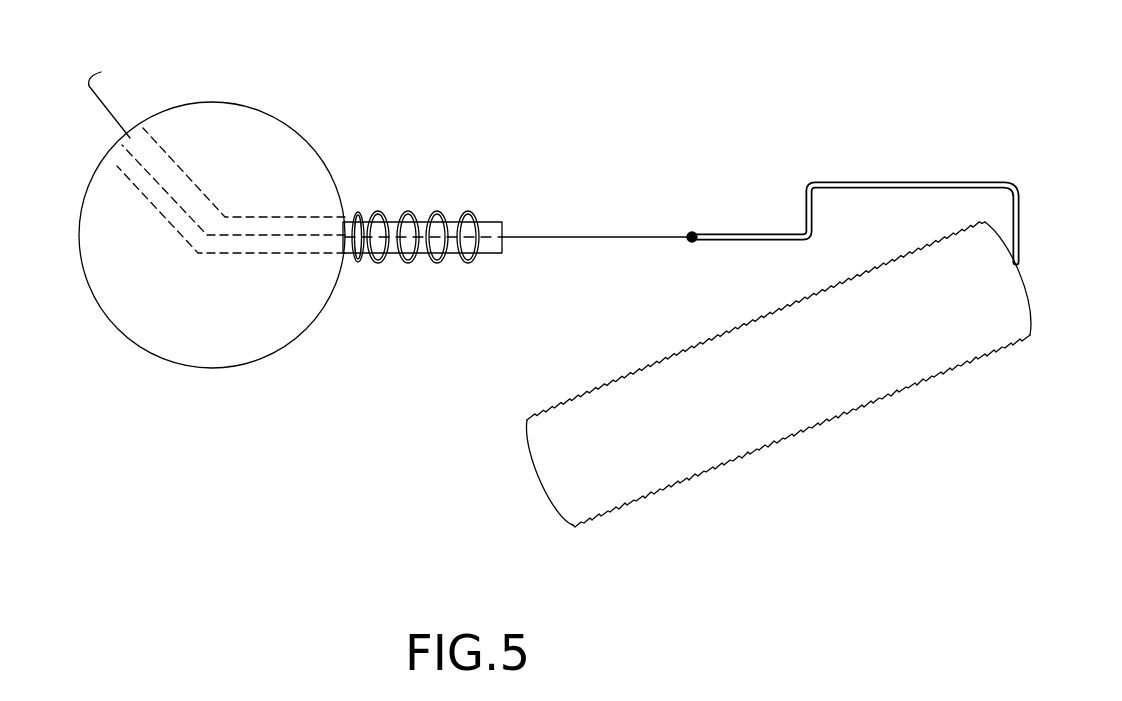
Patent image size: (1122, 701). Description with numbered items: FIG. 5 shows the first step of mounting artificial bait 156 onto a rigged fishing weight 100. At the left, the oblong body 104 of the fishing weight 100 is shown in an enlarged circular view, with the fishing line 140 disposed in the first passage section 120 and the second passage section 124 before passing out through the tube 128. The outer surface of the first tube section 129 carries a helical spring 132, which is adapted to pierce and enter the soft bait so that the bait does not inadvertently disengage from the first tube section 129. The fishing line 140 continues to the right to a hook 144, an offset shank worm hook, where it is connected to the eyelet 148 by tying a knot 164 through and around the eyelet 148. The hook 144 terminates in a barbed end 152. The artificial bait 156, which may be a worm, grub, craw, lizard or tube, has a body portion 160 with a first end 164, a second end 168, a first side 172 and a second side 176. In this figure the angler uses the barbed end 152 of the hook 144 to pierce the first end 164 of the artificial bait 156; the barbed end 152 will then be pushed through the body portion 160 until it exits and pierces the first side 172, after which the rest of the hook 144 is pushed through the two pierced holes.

The fishing weight 100 is at (300, 74).
The oblong body 104 is at (113, 326).
The first passage section 120 is at (172, 122).
The second passage section 124 is at (300, 194).
The tube 128 is at (525, 200).
The first tube section 129 is at (420, 255).
The spring 132 is at (470, 212).
The fishing line 140 is at (104, 107).
The hook 144 is at (945, 155).
The eyelet 148 is at (694, 243).
The barbed end 152 is at (916, 240).
The artificial bait 156 is at (735, 378).
The body portion 160 is at (744, 432).
The first end 164 is at (689, 233).
The second end 168 is at (528, 468).
The first side 172 is at (670, 357).
The second side 176 is at (972, 357).